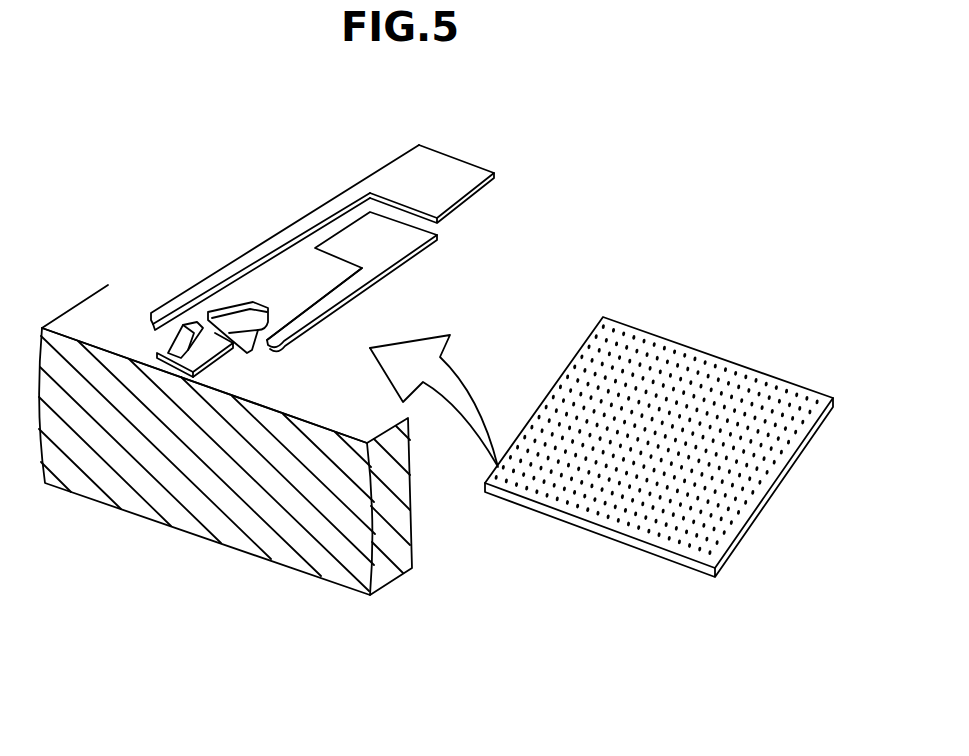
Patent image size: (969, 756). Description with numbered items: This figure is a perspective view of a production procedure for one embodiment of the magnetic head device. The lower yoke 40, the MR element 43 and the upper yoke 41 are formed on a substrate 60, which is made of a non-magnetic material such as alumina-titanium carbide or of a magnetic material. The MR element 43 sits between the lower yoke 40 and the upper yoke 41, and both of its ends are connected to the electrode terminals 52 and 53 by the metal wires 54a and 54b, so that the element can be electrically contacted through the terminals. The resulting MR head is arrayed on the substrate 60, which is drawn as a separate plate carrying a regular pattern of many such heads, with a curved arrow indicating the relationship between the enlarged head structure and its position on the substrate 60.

The lower yoke 40 is at (187, 380).
The upper yoke 41 is at (190, 365).
The MR element 43 is at (198, 306).
The electrode terminal 52 is at (388, 251).
The electrode terminal 53 is at (444, 172).
The metal wire 54a is at (333, 299).
The metal wire 54b is at (258, 250).
The substrate 60 is at (574, 521).